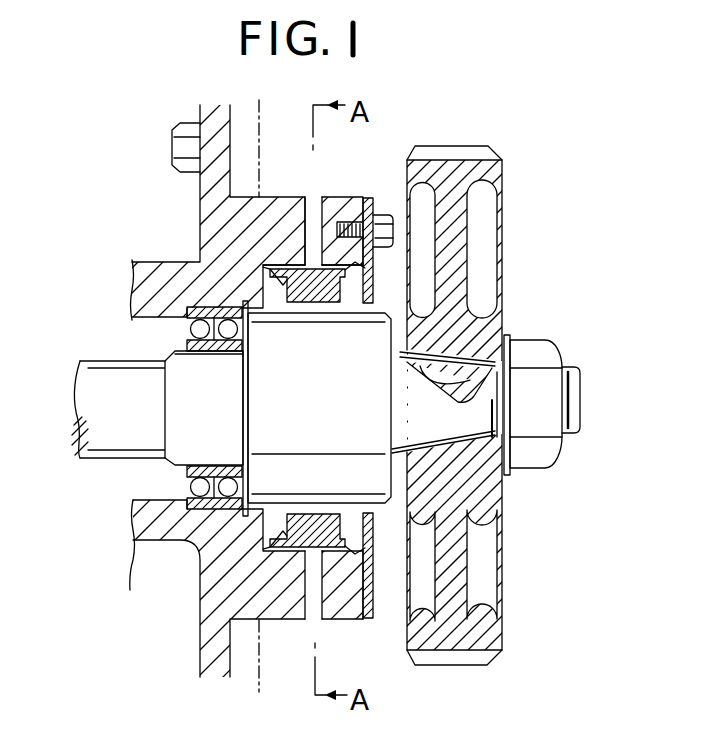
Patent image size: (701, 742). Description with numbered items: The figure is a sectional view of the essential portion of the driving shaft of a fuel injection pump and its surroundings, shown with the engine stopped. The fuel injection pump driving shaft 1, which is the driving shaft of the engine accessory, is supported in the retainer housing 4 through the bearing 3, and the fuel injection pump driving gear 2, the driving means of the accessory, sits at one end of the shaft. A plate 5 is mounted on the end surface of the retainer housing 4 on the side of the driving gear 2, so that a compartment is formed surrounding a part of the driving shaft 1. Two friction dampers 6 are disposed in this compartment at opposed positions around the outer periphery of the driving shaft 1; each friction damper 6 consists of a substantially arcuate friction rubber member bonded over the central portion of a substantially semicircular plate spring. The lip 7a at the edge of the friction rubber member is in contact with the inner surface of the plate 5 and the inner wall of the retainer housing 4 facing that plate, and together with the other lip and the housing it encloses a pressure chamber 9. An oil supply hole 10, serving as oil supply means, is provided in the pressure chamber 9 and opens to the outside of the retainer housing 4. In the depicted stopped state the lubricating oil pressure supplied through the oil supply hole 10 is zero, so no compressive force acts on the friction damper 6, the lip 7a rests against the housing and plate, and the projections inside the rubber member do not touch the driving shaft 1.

The fuel injection pump driving shaft 1 is at (120, 360).
The fuel injection pump driving gear 2 is at (505, 170).
The bearing 3 is at (218, 296).
The retainer housing 4 is at (155, 522).
The plate 5 is at (375, 200).
The friction damper 6 is at (325, 549).
The lip 7a is at (273, 264).
The pressure chamber 9 is at (350, 279).
The oil supply hole 10 is at (312, 212).